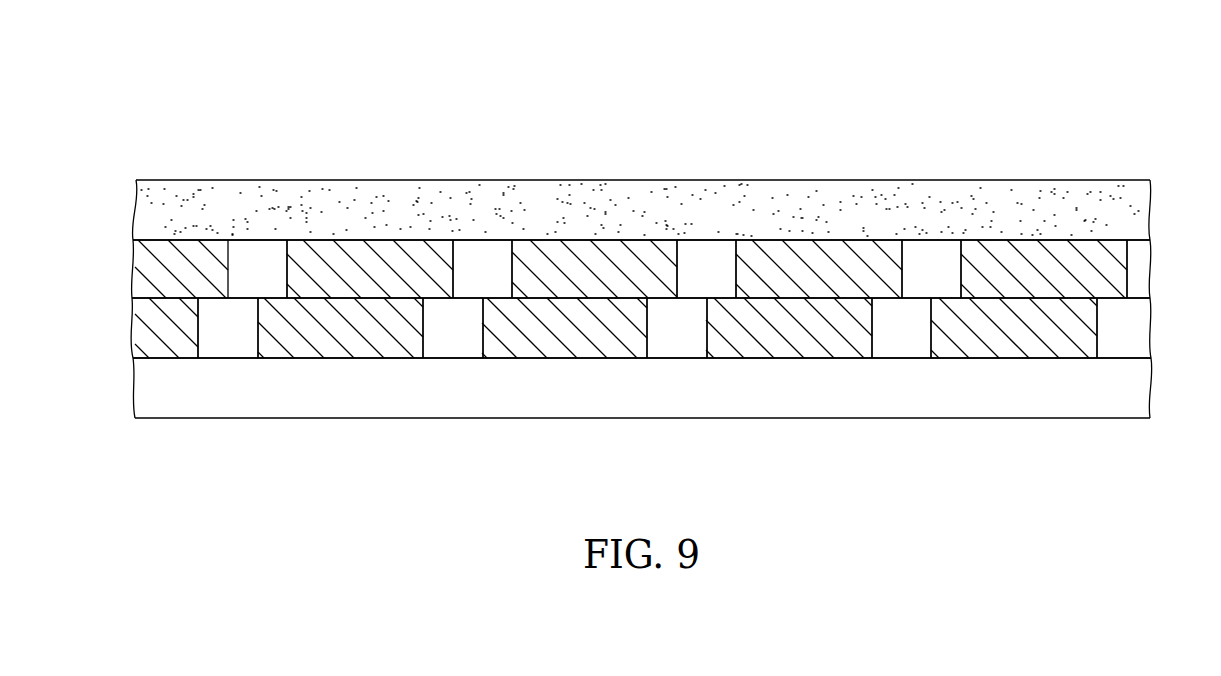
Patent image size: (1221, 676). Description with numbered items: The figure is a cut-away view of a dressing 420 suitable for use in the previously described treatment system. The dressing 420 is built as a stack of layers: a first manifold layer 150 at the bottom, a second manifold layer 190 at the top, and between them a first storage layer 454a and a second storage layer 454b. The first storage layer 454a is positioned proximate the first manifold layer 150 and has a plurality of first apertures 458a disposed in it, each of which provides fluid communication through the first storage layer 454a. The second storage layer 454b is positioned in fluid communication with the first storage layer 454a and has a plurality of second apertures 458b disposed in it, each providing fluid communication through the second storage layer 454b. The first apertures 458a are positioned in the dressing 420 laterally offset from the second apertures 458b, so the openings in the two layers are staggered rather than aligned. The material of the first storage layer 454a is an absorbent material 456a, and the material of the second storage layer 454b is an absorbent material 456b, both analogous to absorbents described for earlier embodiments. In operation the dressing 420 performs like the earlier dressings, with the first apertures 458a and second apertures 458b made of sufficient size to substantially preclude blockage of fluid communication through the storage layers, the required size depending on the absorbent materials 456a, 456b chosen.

The dressing 420 is at (555, 84).
The second manifold layer 190 is at (135, 213).
The first manifold layer 150 is at (135, 387).
The second storage layer 454b is at (112, 242).
The first storage layer 454a is at (112, 302).
The absorbent material 456b is at (383, 246).
The second apertures 458b is at (260, 246).
The absorbent material 456a is at (357, 349).
The first apertures 458a is at (232, 349).